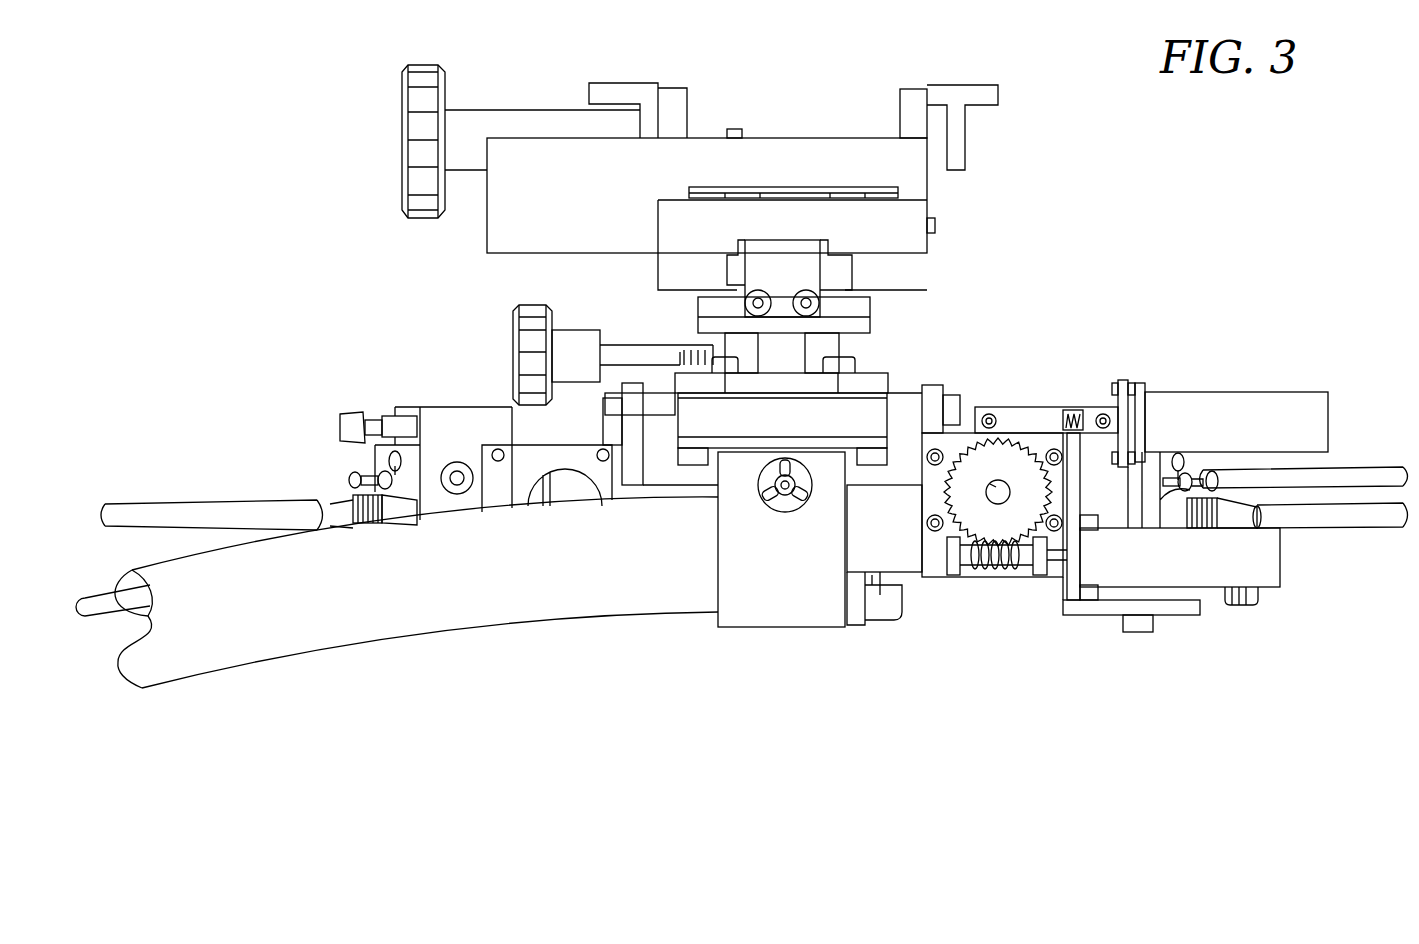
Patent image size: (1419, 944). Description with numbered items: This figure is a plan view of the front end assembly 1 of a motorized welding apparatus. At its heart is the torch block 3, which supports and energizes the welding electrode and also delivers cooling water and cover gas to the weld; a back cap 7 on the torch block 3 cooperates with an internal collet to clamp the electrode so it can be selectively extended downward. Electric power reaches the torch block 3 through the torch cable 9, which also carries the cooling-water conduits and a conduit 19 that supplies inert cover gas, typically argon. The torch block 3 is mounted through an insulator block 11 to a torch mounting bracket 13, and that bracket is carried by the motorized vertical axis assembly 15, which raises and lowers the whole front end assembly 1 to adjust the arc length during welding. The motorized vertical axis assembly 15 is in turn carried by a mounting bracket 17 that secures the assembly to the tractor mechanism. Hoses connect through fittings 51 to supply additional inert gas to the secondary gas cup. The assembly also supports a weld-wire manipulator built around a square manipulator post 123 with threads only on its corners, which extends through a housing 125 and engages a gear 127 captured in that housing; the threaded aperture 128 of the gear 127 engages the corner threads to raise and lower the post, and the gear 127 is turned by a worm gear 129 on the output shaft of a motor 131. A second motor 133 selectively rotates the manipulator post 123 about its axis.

The front end assembly 1 is at (1077, 181).
The torch block 3 is at (773, 620).
The back cap 7 is at (787, 507).
The torch cable 9 is at (270, 640).
The insulator block 11 is at (828, 440).
The torch mounting bracket 13 is at (865, 380).
The motorized vertical axis assembly 15 is at (515, 236).
The mounting bracket 17 is at (950, 92).
The conduit 19 is at (100, 600).
The fittings 51 is at (885, 612).
The manipulator post 123 is at (985, 491).
The housing 125 is at (1052, 438).
The gear 127 is at (982, 515).
The threaded aperture 128 is at (1000, 484).
The worm gear 129 is at (994, 572).
The motor 131 is at (1272, 572).
The second motor 133 is at (1258, 400).